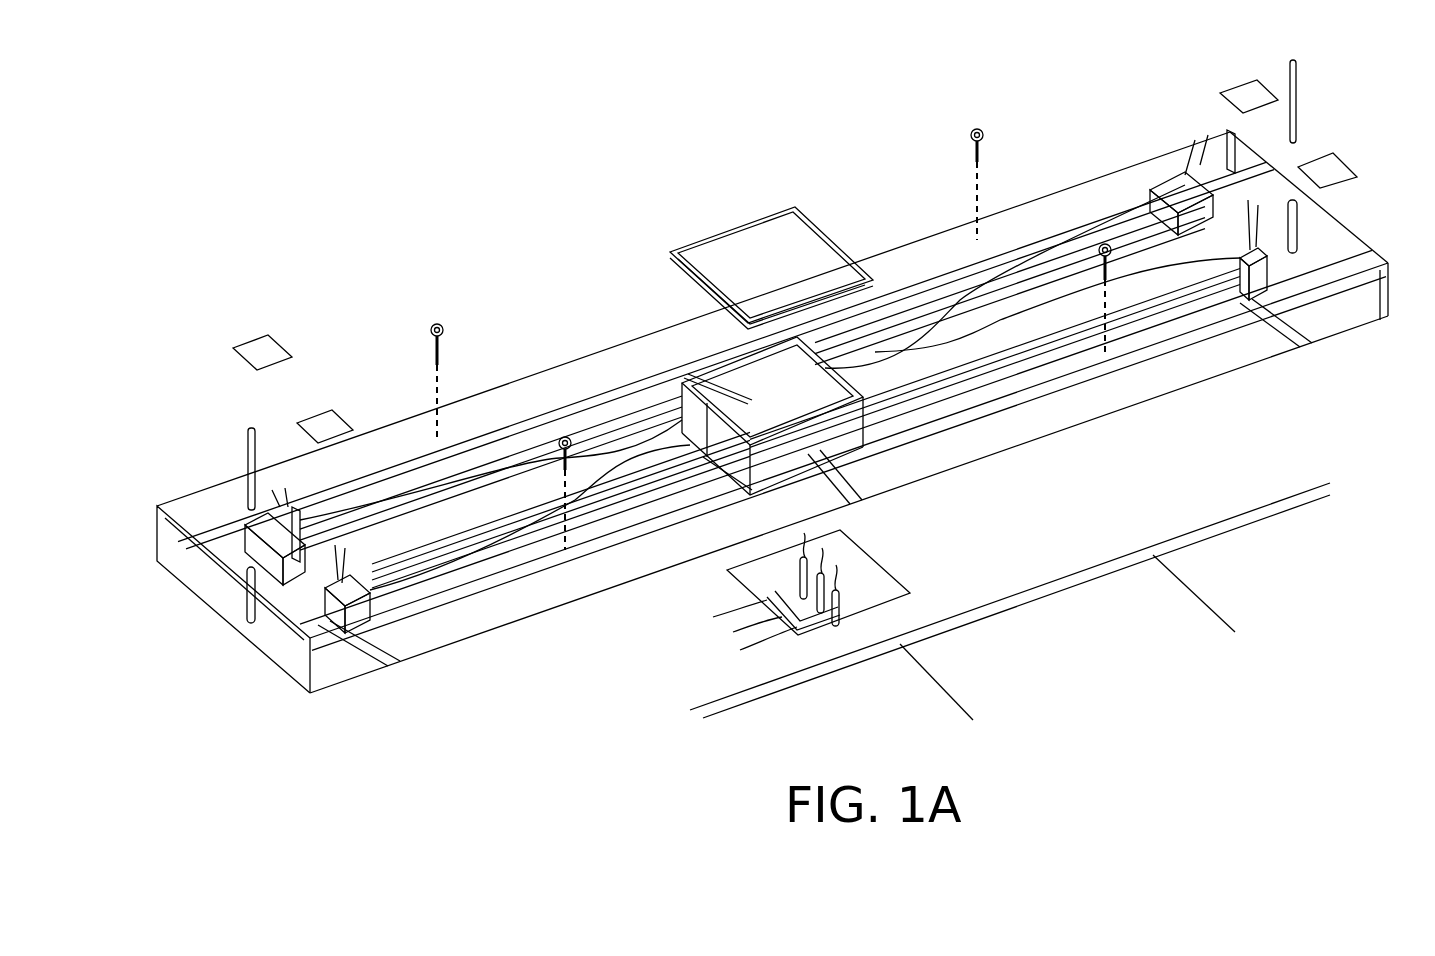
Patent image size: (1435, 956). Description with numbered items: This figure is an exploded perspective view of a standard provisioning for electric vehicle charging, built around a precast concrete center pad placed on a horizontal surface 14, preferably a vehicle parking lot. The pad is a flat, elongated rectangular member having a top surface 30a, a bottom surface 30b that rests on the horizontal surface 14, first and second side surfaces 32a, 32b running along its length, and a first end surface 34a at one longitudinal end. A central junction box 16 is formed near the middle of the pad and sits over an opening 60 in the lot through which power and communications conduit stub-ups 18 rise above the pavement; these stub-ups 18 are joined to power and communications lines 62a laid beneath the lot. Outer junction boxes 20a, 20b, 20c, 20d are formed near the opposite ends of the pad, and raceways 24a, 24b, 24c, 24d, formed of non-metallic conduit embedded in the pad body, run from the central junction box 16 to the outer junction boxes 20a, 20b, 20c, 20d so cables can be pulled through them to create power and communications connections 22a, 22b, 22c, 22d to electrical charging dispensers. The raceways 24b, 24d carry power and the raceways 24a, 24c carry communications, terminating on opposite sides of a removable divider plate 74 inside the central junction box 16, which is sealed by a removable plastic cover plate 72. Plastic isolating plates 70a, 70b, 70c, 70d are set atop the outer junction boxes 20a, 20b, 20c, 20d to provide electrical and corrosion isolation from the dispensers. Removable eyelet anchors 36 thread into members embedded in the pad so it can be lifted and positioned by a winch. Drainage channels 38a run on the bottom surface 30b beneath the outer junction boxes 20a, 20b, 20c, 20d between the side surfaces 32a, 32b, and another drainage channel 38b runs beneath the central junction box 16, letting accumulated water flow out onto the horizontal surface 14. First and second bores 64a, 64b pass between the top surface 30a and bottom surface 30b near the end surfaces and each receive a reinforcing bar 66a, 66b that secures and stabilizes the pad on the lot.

The horizontal surface 14 is at (1063, 540).
The central junction box 16 is at (832, 443).
The stub-ups 18 is at (848, 593).
The outer junction box 20a is at (272, 580).
The outer junction box 20b is at (325, 632).
The outer junction box 20c is at (1167, 187).
The outer junction box 20d is at (1273, 282).
The connections 22a is at (287, 493).
The connections 22b is at (355, 560).
The connections 22c is at (1200, 163).
The connections 22d is at (1262, 200).
The raceways 24a is at (628, 420).
The raceways 24b is at (700, 473).
The raceways 24c is at (853, 337).
The raceways 24d is at (920, 397).
The top surface 30a is at (533, 377).
The bottom surface 30b is at (540, 587).
The first side surface 32a is at (935, 460).
The second side surface 32b is at (867, 250).
The first end surface 34a is at (195, 558).
The eyelet anchors 36 is at (995, 128).
The drainage channel 38a is at (397, 667).
The drainage channel 38b is at (857, 507).
The opening 60 is at (740, 592).
The power and communications line 62a is at (832, 633).
The first bore 64a is at (240, 602).
The second bore 64b is at (1302, 222).
The reinforcing bar 66a is at (247, 432).
The reinforcing bar 66b is at (1300, 107).
The isolating plate 70a is at (283, 340).
The isolating plate 70b is at (347, 417).
The isolating plate 70c is at (1240, 83).
The isolating plate 70d is at (1347, 157).
The removable cover plate 72 is at (725, 225).
The removable divider plate 74 is at (753, 373).